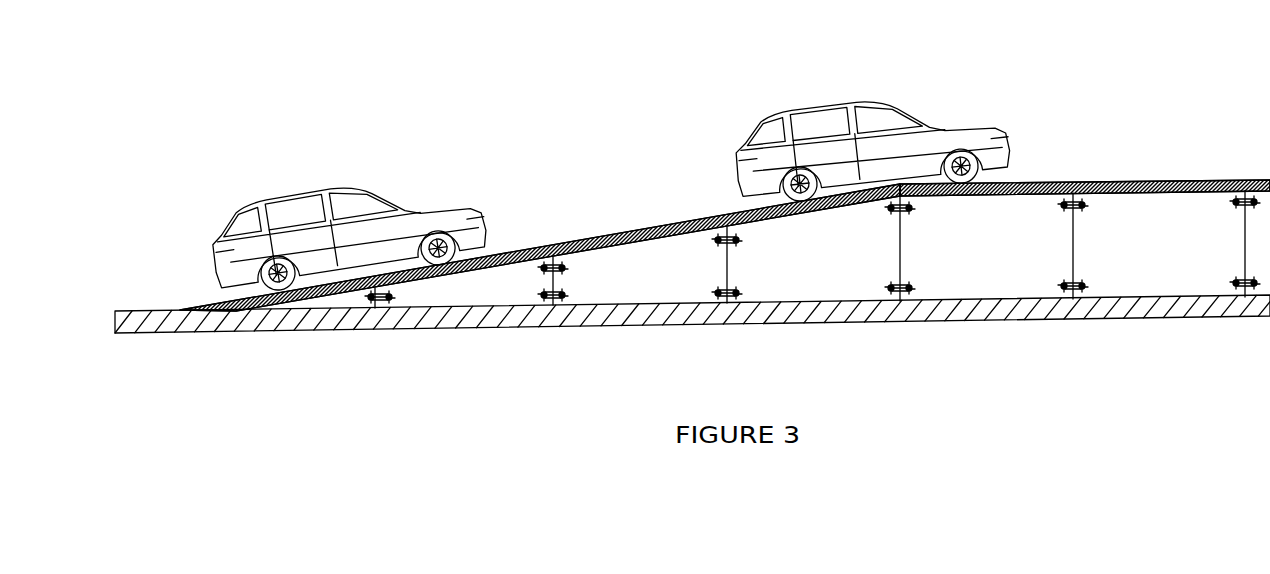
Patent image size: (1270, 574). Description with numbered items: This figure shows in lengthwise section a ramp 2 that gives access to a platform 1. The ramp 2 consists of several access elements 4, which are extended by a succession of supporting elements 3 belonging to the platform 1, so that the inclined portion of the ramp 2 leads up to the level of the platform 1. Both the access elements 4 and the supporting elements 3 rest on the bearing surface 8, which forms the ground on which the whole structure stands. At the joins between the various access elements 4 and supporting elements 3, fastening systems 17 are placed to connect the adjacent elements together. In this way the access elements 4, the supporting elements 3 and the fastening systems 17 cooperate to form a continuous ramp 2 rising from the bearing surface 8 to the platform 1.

The platform 1 is at (1178, 179).
The ramp 2 is at (592, 236).
The supporting elements 3 is at (1178, 266).
The access elements 4 is at (795, 273).
The bearing surface 8 is at (444, 330).
The fastening systems 17 is at (750, 240).